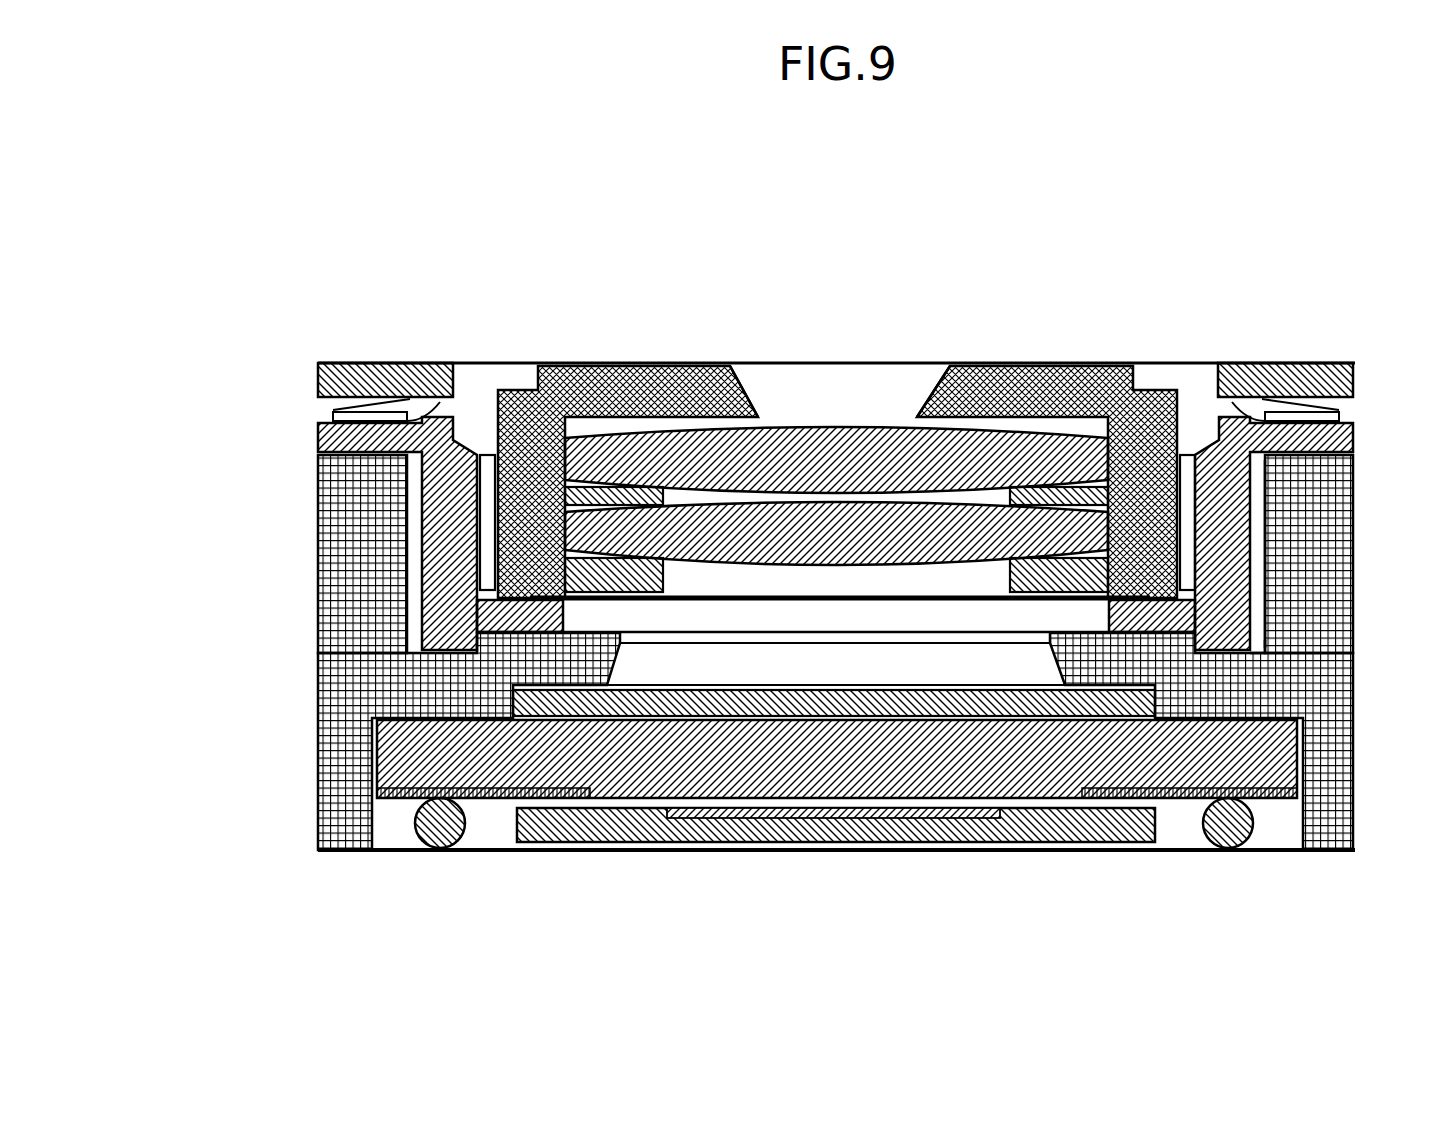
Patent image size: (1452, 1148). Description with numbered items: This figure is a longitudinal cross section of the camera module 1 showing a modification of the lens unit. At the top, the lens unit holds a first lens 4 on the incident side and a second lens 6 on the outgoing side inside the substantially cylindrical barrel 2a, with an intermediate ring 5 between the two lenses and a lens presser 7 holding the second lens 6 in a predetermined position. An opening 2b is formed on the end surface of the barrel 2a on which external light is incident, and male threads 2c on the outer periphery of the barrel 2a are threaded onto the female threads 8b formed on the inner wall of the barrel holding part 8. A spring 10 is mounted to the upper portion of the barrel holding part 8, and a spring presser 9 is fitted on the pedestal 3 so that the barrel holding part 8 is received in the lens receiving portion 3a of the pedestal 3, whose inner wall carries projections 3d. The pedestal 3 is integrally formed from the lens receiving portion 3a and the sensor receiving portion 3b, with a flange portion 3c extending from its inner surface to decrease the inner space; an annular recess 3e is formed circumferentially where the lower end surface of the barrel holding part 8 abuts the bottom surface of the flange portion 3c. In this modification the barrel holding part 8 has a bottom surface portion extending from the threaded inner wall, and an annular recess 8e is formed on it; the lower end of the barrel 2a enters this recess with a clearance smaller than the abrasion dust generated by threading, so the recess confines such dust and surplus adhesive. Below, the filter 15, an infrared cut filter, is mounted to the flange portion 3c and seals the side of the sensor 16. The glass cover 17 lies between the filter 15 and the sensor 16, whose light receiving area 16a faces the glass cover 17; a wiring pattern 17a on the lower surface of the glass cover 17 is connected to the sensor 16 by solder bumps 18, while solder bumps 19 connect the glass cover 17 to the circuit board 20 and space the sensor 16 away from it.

The camera module 1 is at (587, 250).
The barrel 2a is at (1022, 372).
The opening 2b is at (748, 383).
The male threads 2c is at (490, 455).
The pedestal 3 is at (200, 540).
The lens receiving portion 3a is at (293, 458).
The sensor receiving portion 3b is at (293, 662).
The flange portion 3c is at (1062, 676).
The projections 3d is at (1258, 516).
The annular recess 3e is at (1259, 639).
The first lens 4 is at (822, 450).
The intermediate ring 5 is at (660, 492).
The second lens 6 is at (735, 520).
The lens presser 7 is at (592, 570).
The barrel holding part 8 is at (1237, 490).
The female threads 8b is at (448, 402).
The annular recess 8e is at (1194, 598).
The spring presser 9 is at (1240, 383).
The spring 10 is at (1355, 400).
The filter 15 is at (790, 700).
The sensor 16 is at (633, 828).
The light receiving area 16a is at (690, 815).
The glass cover 17 is at (795, 770).
The wiring pattern 17a is at (1183, 800).
The solder bumps 18 is at (550, 805).
The solder bumps 19 is at (440, 848).
The circuit board 20 is at (1350, 851).